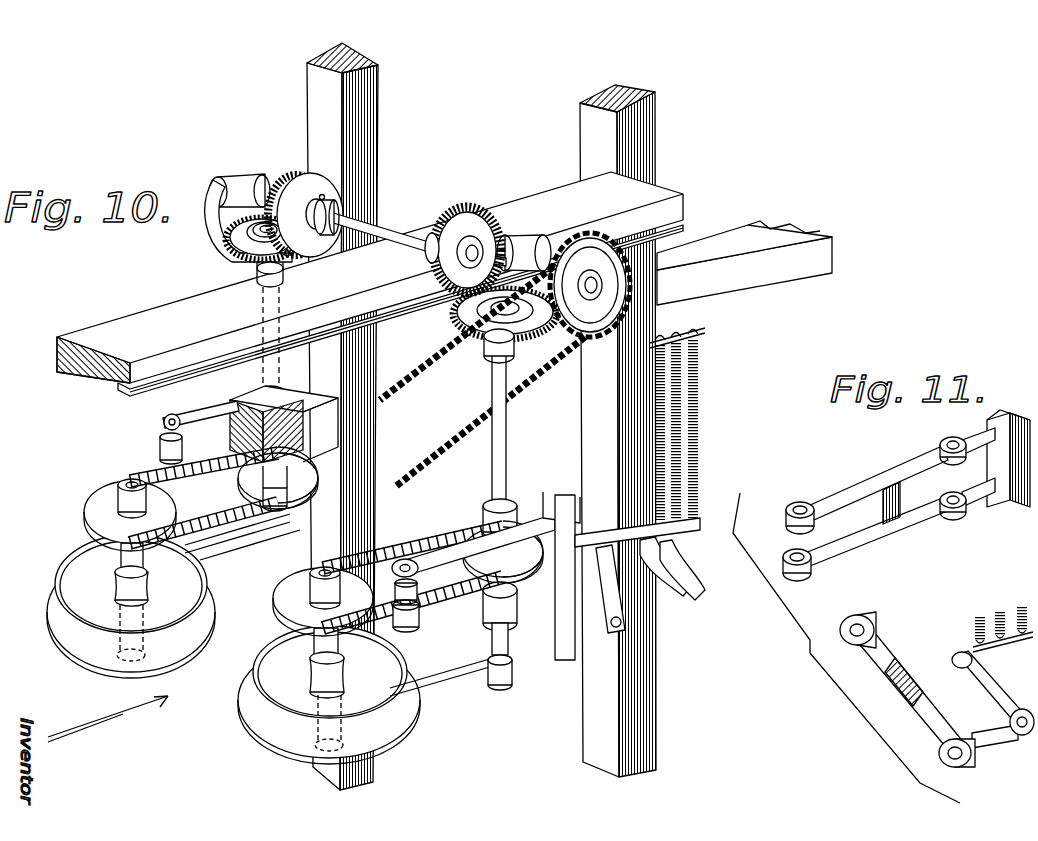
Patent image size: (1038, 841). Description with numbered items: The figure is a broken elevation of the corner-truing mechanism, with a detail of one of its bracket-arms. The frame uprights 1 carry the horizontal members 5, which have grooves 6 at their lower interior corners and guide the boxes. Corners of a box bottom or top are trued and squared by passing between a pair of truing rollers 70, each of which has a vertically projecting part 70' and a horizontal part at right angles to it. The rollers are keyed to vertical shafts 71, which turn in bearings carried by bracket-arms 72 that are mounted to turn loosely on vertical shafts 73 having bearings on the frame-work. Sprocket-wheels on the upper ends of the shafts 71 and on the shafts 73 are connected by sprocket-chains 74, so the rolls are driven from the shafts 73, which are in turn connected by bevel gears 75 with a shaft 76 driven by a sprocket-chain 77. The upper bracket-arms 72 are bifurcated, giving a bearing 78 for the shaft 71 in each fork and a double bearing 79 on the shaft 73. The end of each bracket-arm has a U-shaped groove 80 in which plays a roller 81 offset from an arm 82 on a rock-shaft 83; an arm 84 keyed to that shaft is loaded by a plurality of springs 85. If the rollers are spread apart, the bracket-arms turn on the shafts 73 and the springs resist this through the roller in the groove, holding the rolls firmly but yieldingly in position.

In FIG. 10, the uprights 1 is at (372, 112).
In FIG. 10, the members 5 is at (80, 375).
In FIG. 10, the grooves 6 is at (128, 393).
In FIG. 10, the truing rollers 70 is at (233, 649).
In FIG. 10, the vertically projecting part 70' is at (290, 548).
In FIG. 10, the vertical shafts 71 is at (122, 583).
In FIG. 10, the bracket-arms 72 is at (165, 452).
In FIG. 11, the bracket-arms 72 is at (885, 483).
In FIG. 10, the vertical shafts 73 is at (267, 365).
In FIG. 10, the sprocket-chains 74 is at (235, 548).
In FIG. 10, the bevel gears 75 is at (290, 183).
In FIG. 10, the shaft 76 is at (446, 201).
In FIG. 10, the sprocket-chain 77 is at (448, 462).
In FIG. 11, the bearing 78 is at (802, 504).
In FIG. 11, the bearings 79 is at (953, 438).
In FIG. 11, the U-shaped groove 80 is at (1014, 418).
In FIG. 11, the roller 81 is at (863, 614).
In FIG. 11, the arm 82 is at (912, 658).
In FIG. 10, the rock-shaft 83 is at (593, 663).
In FIG. 11, the rock-shaft 83 is at (982, 737).
In FIG. 11, the arm 84 is at (997, 687).
In FIG. 10, the springs 85 is at (662, 410).
In FIG. 11, the springs 85 is at (1022, 605).